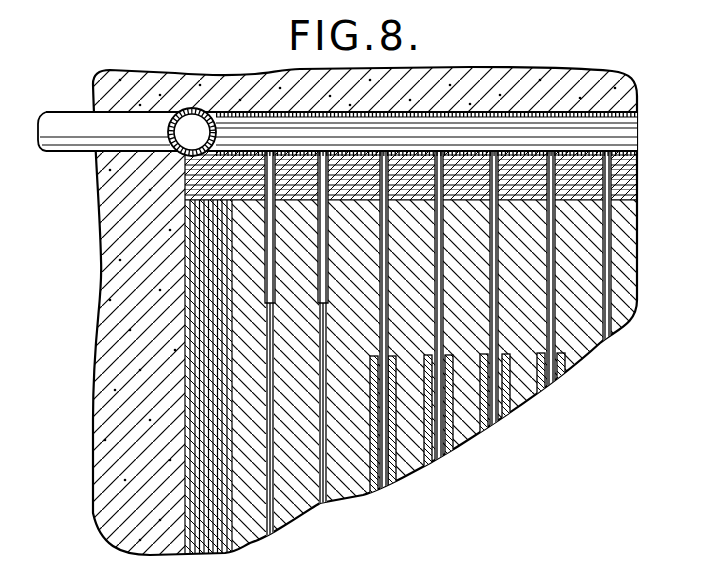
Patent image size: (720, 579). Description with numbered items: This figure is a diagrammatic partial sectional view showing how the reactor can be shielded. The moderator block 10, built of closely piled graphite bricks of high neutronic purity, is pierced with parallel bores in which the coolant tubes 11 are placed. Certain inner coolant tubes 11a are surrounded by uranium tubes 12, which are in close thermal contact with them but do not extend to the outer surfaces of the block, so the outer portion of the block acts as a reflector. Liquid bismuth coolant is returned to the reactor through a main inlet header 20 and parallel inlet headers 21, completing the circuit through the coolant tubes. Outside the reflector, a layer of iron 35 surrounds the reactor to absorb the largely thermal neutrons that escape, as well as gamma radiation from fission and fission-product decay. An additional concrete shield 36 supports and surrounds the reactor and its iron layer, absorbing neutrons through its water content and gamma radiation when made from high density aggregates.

The moderator block 10 is at (578, 275).
The coolant tubes 11 is at (320, 502).
The inner coolant tubes 11a is at (495, 418).
The uranium tubes 12 is at (528, 384).
The main inlet header 20 is at (168, 122).
The parallel inlet headers 21 is at (268, 72).
The iron layer 35 is at (197, 272).
The concrete shield 36 is at (110, 467).